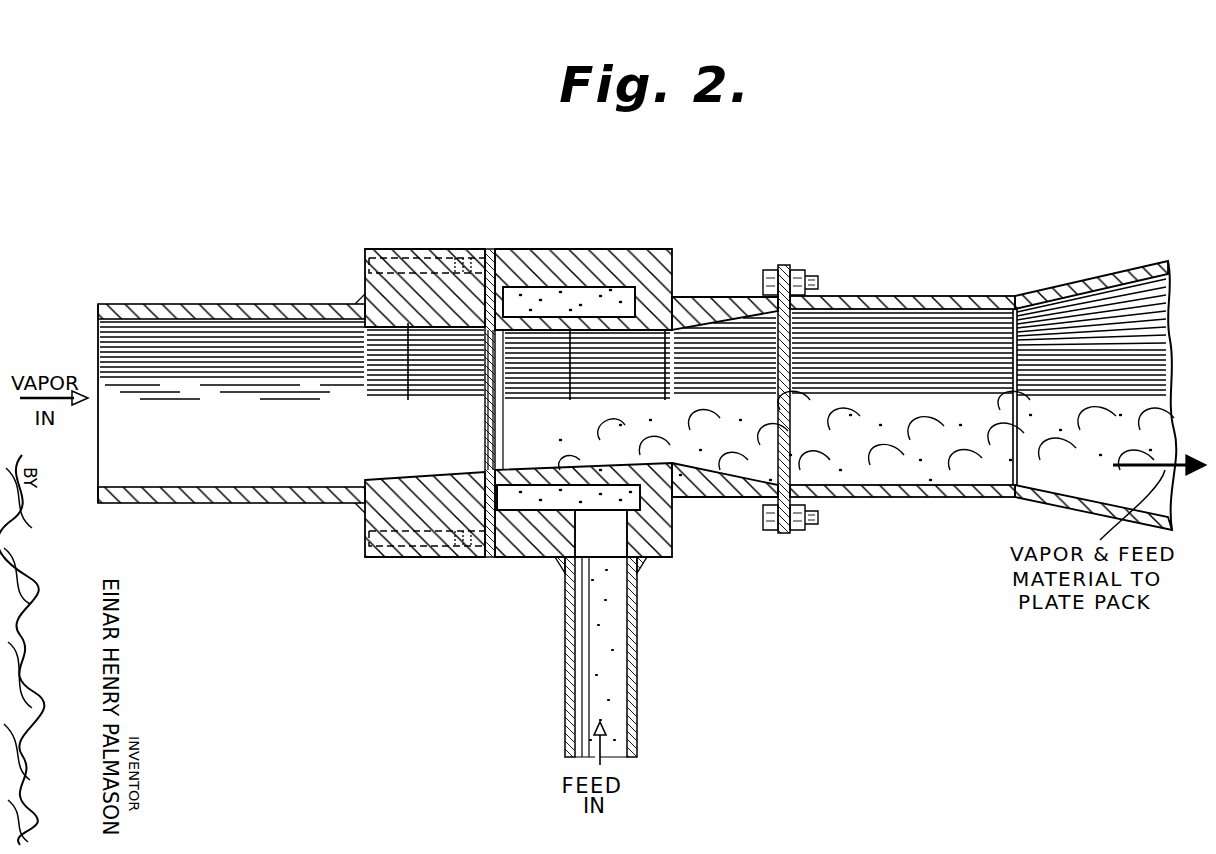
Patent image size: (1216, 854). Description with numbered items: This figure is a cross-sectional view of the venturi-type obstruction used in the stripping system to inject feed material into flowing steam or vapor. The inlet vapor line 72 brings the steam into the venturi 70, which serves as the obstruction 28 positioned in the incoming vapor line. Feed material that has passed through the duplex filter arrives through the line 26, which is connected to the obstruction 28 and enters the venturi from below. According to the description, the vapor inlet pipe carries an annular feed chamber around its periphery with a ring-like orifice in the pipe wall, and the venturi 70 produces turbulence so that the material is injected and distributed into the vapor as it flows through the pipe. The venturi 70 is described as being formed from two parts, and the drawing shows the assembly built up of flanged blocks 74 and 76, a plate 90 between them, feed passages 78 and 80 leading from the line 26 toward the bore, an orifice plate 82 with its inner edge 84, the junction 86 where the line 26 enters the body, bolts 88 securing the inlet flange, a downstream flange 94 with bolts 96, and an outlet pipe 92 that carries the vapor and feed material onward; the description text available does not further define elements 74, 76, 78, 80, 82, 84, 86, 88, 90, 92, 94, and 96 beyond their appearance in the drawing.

The line for conveying material from the duplex filter 26 is at (637, 625).
The obstruction 28 is at (604, 242).
The venturi 70 is at (660, 466).
The inlet vapor line 72 is at (278, 503).
The inlet flange block 74 is at (415, 249).
The nozzle body block 76 is at (552, 249).
The feed passage 78 is at (542, 470).
The upper feed passage 80 is at (598, 300).
The orifice plate 82 is at (490, 460).
The orifice plate inner edge 84 is at (505, 362).
The feed pipe junction 86 is at (615, 540).
The flange bolts 88 is at (365, 266).
The gasket plate 90 is at (490, 249).
The outlet pipe 92 is at (905, 497).
The outlet flange 94 is at (778, 268).
The flange bolts 96 is at (798, 270).